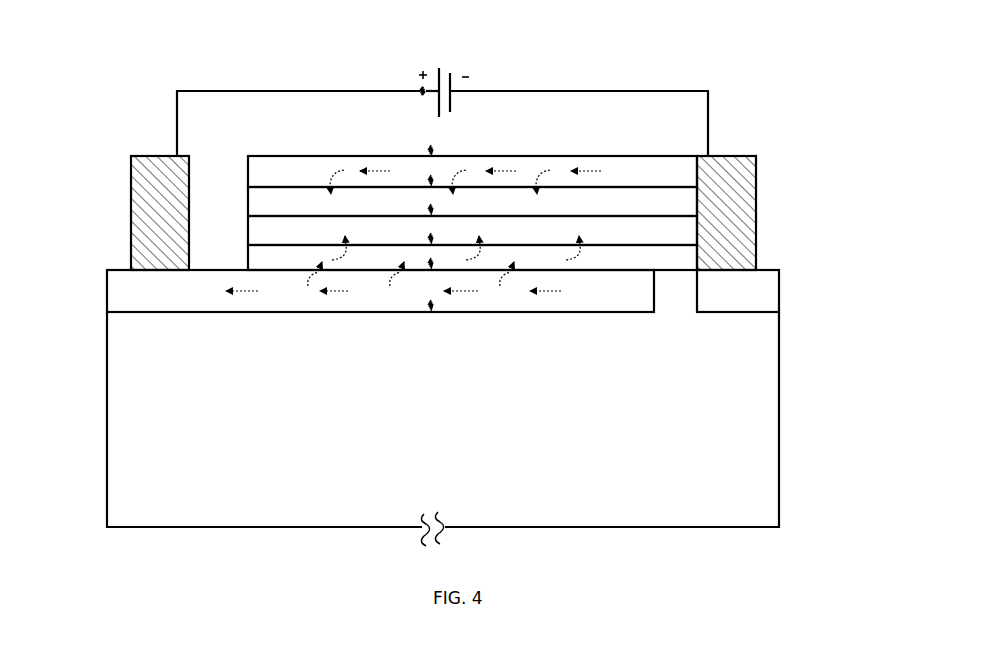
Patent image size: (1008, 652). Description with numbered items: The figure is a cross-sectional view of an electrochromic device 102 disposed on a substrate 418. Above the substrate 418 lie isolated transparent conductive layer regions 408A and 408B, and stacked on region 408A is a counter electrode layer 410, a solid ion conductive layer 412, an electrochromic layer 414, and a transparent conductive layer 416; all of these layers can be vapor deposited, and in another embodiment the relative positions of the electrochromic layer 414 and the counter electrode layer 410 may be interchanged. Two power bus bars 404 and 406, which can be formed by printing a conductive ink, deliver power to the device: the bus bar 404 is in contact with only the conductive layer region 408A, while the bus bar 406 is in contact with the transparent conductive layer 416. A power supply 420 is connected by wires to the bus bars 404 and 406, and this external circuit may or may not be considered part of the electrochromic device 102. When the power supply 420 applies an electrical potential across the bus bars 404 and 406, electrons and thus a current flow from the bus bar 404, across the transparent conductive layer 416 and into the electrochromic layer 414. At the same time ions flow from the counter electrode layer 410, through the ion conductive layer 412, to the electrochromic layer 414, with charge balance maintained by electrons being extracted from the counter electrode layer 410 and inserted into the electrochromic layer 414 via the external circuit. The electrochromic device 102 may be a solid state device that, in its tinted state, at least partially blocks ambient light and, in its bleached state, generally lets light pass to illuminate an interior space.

The electrochromic device 102 is at (818, 63).
The bus bar 404 is at (130, 234).
The bus bar 406 is at (755, 216).
The isolated transparent conductive layer region 408A is at (113, 294).
The isolated transparent conductive layer region 408B is at (768, 294).
The counter electrode layer 410 is at (252, 259).
The solid ion conductive layer 412 is at (252, 229).
The electrochromic layer 414 is at (252, 199).
The transparent conductive layer 416 is at (636, 155).
The substrate 418 is at (457, 419).
The power supply 420 is at (277, 81).